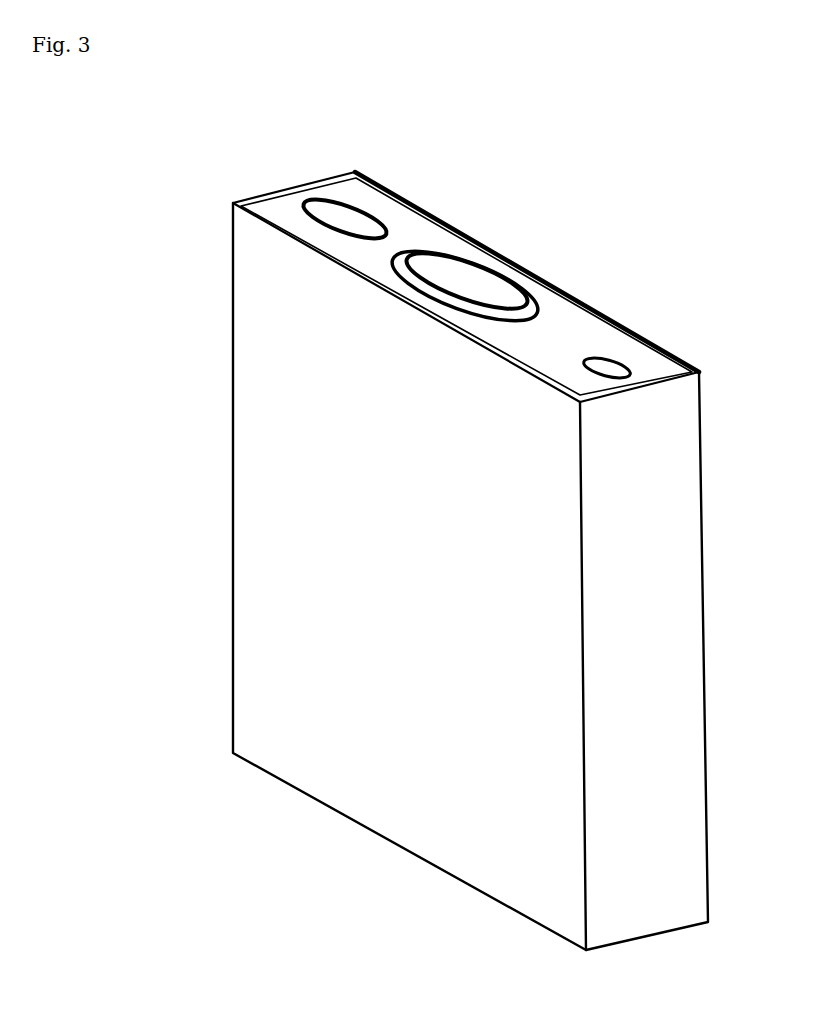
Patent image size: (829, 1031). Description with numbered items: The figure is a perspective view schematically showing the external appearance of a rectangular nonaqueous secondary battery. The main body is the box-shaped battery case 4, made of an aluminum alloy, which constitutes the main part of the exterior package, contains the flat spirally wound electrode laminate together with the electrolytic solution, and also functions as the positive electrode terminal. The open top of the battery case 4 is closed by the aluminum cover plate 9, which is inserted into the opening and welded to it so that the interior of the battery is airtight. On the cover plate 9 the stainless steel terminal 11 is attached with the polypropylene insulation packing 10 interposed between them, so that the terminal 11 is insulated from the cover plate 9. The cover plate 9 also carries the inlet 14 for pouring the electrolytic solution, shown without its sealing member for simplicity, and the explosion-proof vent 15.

The battery case 4 is at (692, 507).
The cover plate 9 is at (408, 215).
The insulation packing 10 is at (532, 298).
The terminal 11 is at (480, 278).
The inlet 14 is at (610, 368).
The explosion-proof vent 15 is at (336, 214).